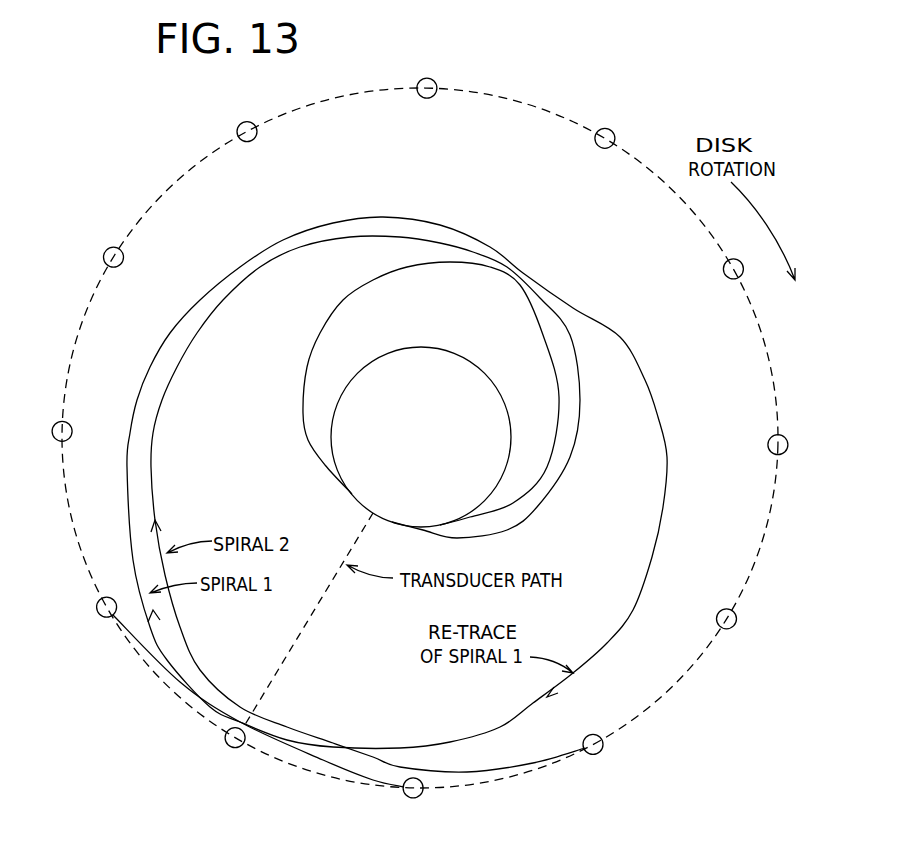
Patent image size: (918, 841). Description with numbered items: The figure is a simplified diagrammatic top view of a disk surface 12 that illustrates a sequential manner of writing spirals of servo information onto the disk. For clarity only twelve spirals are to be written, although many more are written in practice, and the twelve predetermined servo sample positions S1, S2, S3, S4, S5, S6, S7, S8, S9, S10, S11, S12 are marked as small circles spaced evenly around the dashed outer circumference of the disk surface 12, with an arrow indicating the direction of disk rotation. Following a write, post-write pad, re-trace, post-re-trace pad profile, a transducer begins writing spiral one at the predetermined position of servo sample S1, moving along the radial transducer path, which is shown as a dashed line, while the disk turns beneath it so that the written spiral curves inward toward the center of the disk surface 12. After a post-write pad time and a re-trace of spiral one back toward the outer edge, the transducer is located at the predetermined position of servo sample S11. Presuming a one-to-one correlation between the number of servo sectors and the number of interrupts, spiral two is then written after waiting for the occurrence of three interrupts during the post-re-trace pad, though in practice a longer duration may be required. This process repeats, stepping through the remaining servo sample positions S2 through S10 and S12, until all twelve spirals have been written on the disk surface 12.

The disk surface 12 is at (551, 221).
The servo sample 1 S1 is at (413, 800).
The servo sample 2 S2 is at (600, 757).
The servo sample 3 S3 is at (741, 628).
The servo sample 4 S4 is at (791, 447).
The servo sample 5 S5 is at (748, 268).
The servo sample 6 S6 is at (617, 131).
The servo sample 7 S7 is at (426, 75).
The servo sample 8 S8 is at (233, 122).
The servo sample 9 S9 is at (98, 254).
The servo sample 10 S10 is at (43, 429).
The servo sample 11 S11 is at (87, 607).
The servo sample 12 S12 is at (223, 752).